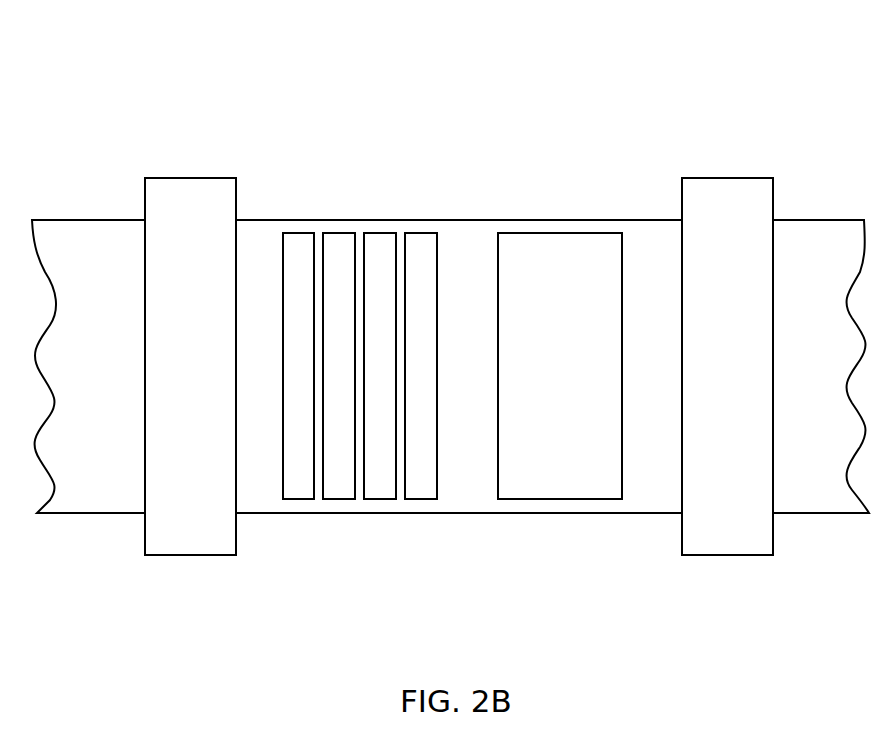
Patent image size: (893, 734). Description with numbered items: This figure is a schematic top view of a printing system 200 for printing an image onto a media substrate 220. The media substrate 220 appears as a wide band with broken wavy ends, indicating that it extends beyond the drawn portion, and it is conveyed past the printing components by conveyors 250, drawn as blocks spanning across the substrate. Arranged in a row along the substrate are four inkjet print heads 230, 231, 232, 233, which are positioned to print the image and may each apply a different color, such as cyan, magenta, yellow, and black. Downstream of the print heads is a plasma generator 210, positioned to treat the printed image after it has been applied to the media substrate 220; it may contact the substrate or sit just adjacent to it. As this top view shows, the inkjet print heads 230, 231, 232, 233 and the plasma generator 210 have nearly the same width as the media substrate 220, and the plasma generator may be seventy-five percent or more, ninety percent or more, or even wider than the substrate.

The printing system 200 is at (182, 61).
The media substrate 220 is at (75, 248).
The conveyors 250 is at (193, 533).
The inkjet print head 230 is at (297, 247).
The inkjet print head 231 is at (337, 243).
The inkjet print head 232 is at (378, 243).
The inkjet print head 233 is at (423, 243).
The plasma generator 210 is at (558, 253).